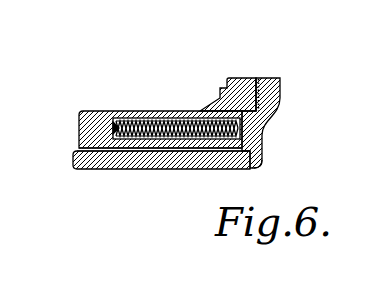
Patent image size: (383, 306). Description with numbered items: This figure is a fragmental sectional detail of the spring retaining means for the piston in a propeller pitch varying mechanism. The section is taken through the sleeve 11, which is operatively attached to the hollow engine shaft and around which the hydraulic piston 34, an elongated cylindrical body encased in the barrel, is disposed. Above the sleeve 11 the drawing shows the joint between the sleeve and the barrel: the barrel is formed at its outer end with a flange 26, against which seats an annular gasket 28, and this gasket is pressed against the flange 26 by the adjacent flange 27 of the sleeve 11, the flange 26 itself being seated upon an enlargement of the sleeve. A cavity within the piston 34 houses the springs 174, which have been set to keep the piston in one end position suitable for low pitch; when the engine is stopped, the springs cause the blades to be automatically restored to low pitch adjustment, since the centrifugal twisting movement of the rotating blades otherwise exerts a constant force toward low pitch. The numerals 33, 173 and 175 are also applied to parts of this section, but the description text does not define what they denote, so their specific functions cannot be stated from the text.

The sleeve 11 is at (129, 169).
The flange 26 is at (235, 78).
The flange of the sleeve 27 is at (282, 91).
The annular gasket 28 is at (257, 78).
The rounded lower edge of side member 33 is at (259, 159).
The hydraulic piston 34 is at (93, 110).
The coil spring 173 is at (165, 118).
The springs 174 is at (169, 152).
The joint layer between block and plate 175 is at (95, 160).